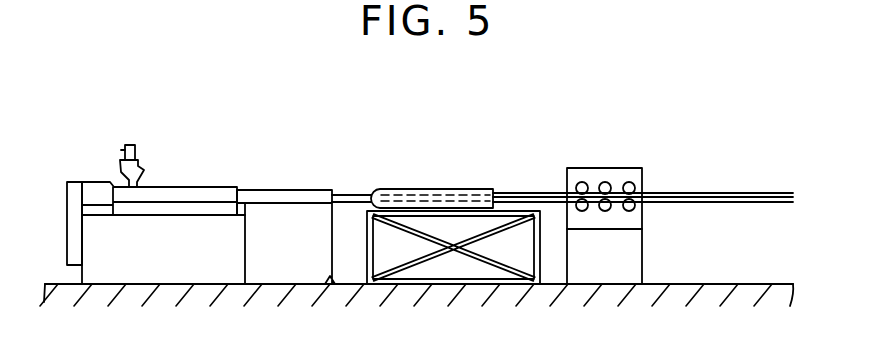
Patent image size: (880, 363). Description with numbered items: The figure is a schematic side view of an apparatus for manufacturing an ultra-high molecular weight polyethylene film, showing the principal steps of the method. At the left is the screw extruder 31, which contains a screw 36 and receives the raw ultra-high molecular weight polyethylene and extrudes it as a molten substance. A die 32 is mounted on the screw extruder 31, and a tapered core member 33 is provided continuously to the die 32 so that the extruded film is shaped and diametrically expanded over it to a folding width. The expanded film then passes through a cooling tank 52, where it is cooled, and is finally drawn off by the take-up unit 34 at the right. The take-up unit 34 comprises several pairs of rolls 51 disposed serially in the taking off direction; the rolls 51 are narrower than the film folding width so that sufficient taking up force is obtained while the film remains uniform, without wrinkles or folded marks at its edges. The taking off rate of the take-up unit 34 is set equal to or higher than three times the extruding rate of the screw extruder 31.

The screw extruder 31 is at (193, 186).
The die 32 is at (278, 190).
The tapered core member 33 is at (357, 194).
The take-up unit 34 is at (627, 168).
The screw 36 is at (143, 164).
The rolls 51 is at (583, 181).
The cooling tank 52 is at (467, 188).